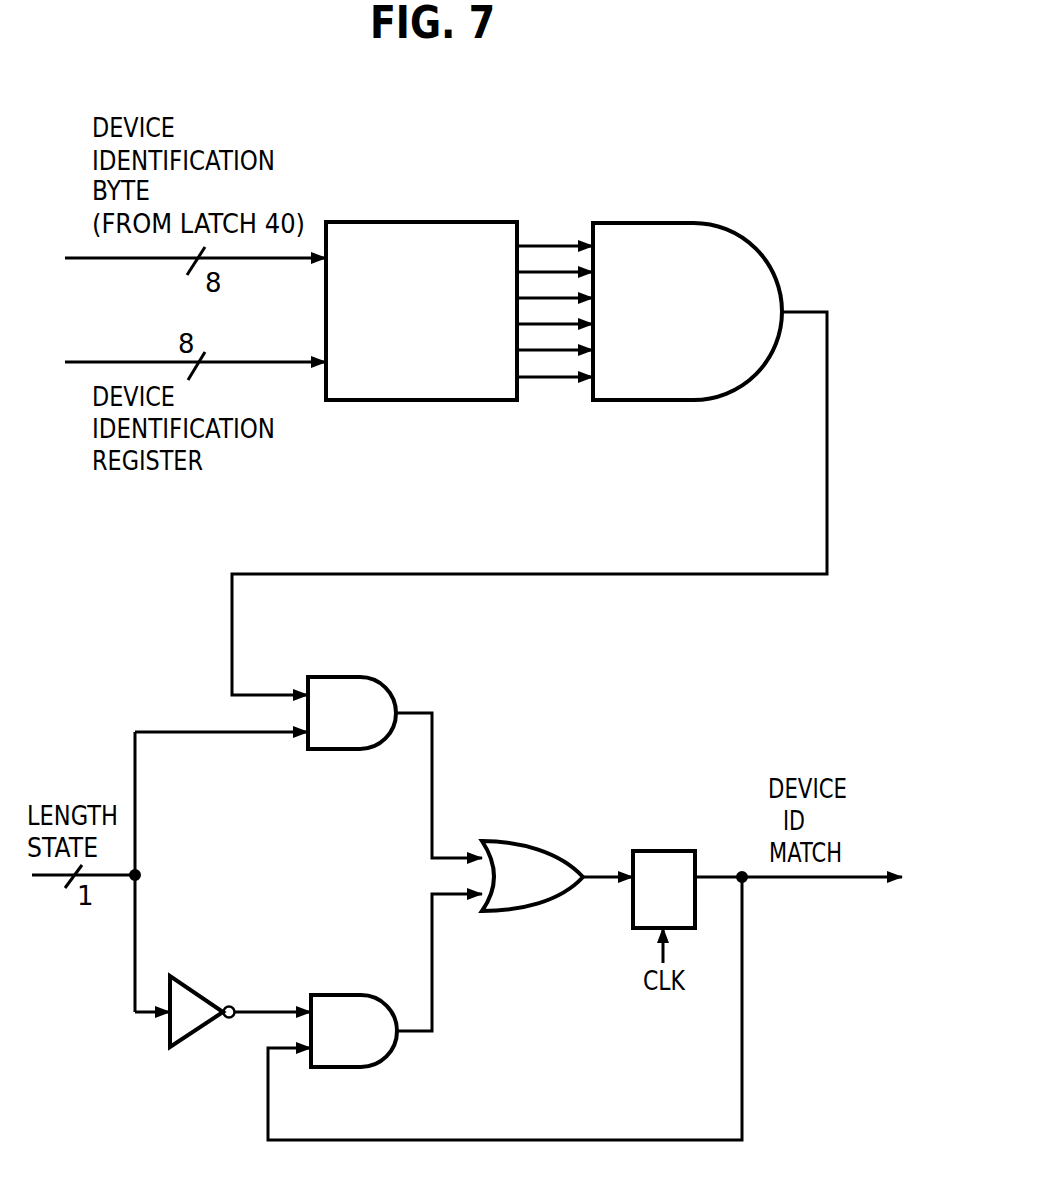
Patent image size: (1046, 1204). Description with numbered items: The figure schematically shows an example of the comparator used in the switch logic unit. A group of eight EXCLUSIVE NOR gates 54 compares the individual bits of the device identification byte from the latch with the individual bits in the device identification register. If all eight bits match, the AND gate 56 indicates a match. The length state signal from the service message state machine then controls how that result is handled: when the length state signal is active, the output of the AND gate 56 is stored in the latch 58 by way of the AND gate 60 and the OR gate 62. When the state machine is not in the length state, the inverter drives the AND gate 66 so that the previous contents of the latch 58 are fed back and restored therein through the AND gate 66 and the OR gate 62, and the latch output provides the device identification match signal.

The EXCLUSIVE NOR gates 54 is at (433, 222).
The AND gate 56 is at (683, 222).
The latch 58 is at (667, 851).
The AND gate 60 is at (337, 749).
The OR gate 62 is at (520, 840).
The AND gate 66 is at (340, 995).